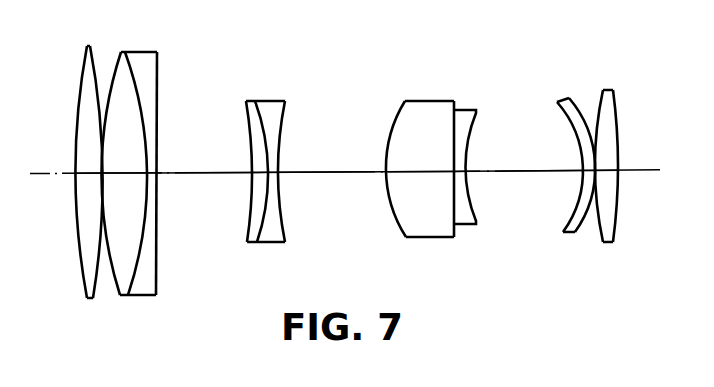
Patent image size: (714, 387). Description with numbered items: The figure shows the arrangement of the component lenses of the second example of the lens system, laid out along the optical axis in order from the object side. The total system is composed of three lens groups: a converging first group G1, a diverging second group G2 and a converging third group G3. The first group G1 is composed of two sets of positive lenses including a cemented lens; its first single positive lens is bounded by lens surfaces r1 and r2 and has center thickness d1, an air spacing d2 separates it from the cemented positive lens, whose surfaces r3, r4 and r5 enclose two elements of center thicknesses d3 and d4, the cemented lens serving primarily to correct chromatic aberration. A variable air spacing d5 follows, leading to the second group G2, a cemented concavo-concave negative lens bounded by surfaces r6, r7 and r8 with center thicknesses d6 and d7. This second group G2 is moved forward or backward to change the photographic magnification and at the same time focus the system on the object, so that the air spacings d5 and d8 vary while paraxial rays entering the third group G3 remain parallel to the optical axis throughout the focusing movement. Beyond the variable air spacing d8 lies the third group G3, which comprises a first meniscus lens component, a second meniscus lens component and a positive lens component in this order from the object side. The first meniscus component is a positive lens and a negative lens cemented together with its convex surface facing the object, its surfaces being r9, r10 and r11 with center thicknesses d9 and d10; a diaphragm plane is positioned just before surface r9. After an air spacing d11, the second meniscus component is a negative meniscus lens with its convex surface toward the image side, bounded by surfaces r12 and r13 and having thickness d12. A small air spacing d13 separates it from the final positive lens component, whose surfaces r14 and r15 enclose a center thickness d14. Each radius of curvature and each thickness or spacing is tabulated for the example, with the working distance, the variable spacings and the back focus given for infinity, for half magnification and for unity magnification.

The converging first group G1 is at (162, 40).
The diverging second group G2 is at (300, 78).
The converging third group G3 is at (623, 80).
The first lens surface r1 is at (83, 282).
The second lens surface r2 is at (100, 292).
The third lens surface r3 is at (117, 282).
The fourth lens surface r4 is at (133, 283).
The fifth lens surface r5 is at (158, 283).
The sixth lens surface r6 is at (247, 231).
The seventh lens surface r7 is at (259, 233).
The eighth lens surface r8 is at (279, 232).
The ninth lens surface r9 is at (400, 236).
The tenth lens surface r10 is at (449, 235).
The eleventh lens surface r11 is at (468, 228).
The twelfth lens surface r12 is at (558, 222).
The thirteenth lens surface r13 is at (578, 226).
The fourteenth lens surface r14 is at (601, 234).
The fifteenth lens surface r15 is at (614, 238).
The center thickness of first lens d1 is at (89, 162).
The air spacing between first and second lenses d2 is at (104, 176).
The center thickness of second lens d3 is at (124, 162).
The center thickness of third lens d4 is at (152, 177).
The variable air spacing between first and second groups d5 is at (204, 162).
The center thickness of fourth lens d6 is at (253, 175).
The center thickness of fifth lens d7 is at (280, 175).
The variable air spacing between second and third groups d8 is at (332, 162).
The center thickness of sixth lens d9 is at (420, 161).
The center thickness of seventh lens d10 is at (457, 174).
The air spacing between first and second meniscus components d11 is at (524, 162).
The center thickness of eighth lens d12 is at (584, 173).
The air spacing between second meniscus and positive component d13 is at (596, 172).
The center thickness of ninth lens d14 is at (606, 170).